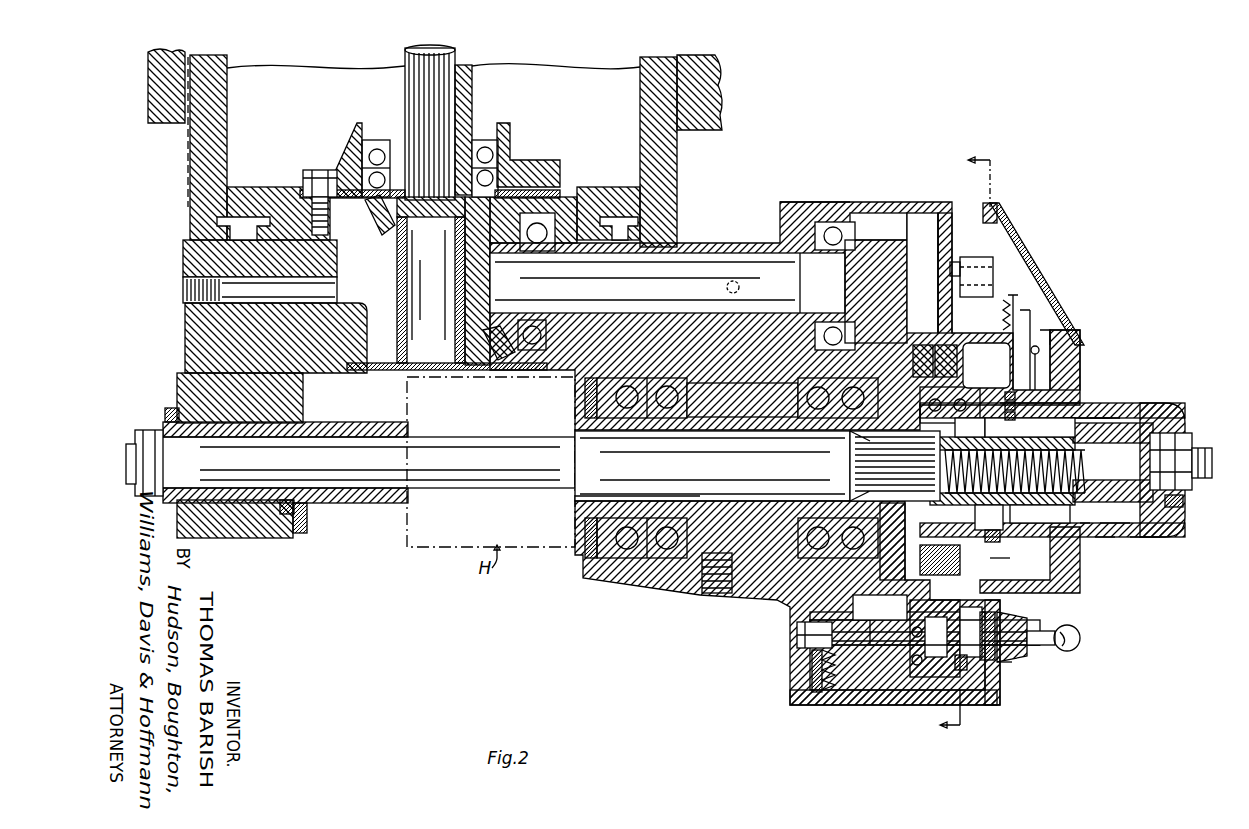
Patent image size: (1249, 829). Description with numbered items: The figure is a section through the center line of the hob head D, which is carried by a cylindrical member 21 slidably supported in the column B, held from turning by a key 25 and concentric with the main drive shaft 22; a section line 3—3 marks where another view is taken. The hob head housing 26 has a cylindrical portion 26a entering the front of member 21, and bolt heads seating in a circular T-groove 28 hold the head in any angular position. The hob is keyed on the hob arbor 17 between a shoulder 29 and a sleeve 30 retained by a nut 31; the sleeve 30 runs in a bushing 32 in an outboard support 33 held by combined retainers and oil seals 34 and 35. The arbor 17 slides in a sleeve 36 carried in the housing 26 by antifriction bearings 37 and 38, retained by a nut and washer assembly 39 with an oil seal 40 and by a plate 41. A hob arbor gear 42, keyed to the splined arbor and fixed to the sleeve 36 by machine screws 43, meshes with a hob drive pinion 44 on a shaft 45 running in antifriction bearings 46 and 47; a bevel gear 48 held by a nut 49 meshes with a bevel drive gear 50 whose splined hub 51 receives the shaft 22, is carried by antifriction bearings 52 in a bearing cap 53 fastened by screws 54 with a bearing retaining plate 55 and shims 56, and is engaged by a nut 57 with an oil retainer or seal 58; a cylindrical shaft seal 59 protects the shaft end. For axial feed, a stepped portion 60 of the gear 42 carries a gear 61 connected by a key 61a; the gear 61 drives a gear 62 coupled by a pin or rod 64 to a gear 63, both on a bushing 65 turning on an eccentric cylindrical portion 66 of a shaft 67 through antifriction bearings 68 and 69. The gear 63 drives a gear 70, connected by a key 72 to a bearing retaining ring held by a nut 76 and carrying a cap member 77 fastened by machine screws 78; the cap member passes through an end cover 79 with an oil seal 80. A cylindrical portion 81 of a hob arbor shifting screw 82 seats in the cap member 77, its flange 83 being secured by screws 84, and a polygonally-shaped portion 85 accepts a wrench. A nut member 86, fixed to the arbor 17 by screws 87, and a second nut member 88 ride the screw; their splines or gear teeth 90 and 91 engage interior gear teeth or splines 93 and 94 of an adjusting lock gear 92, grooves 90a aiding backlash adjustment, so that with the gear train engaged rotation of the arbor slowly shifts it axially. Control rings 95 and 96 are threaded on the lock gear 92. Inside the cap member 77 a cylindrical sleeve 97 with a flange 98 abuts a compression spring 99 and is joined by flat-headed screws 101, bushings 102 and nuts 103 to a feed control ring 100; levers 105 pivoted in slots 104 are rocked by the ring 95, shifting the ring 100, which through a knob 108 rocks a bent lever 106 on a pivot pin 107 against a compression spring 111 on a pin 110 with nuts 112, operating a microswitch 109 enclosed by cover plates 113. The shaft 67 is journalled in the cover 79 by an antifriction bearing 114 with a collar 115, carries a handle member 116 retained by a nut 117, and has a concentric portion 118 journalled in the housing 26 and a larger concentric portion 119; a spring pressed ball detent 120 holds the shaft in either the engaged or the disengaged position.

The hob arbor 17 is at (575, 442).
The cylindrical member 21 is at (677, 170).
The main drive shaft 22 is at (472, 85).
The key 25 is at (186, 150).
The hob head housing 26 is at (750, 243).
The cylindrical portion 26a is at (575, 197).
The circular T-groove 28 is at (245, 215).
The shoulder 29 is at (575, 497).
The sleeve 30 is at (352, 503).
The nut 31 is at (152, 428).
The bushing 32 is at (225, 515).
The outboard support 33 is at (293, 520).
The combined retainer and oil seal 34 is at (170, 408).
The combined retainer and oil seal 35 is at (286, 514).
The sleeve 36 is at (745, 417).
The antifriction bearings 37 is at (682, 390).
The antifriction bearings 38 is at (798, 397).
The nut and washer assembly 39 is at (585, 396).
The oil seal 40 is at (585, 548).
The plate 41 is at (830, 650).
The hob arbor gear 42 is at (900, 620).
The machine screws 43 is at (855, 452).
The hob drive pinion 44 is at (882, 250).
The shaft 45 is at (693, 253).
The antifriction bearing 46 is at (835, 222).
The antifriction bearing 47 is at (530, 352).
The bevel gear 48 is at (490, 352).
The nut 49 is at (489, 340).
The bevel drive gear 50 is at (385, 230).
The splined hub 51 is at (405, 80).
The antifriction bearings 52 is at (498, 162).
The bearing cap 53 is at (540, 180).
The screws 54 is at (322, 170).
The bearing retaining plate 55 is at (365, 200).
The shims 56 is at (355, 198).
The nut 57 is at (487, 140).
The oil retainer or seal 58 is at (377, 140).
The cylindrical shaft seal 59 is at (397, 296).
The stepped portion 60 is at (945, 302).
The gear 61 is at (925, 345).
The key 61a is at (940, 352).
The gear 62 is at (925, 677).
The gear 63 is at (965, 702).
The pin or rod 64 is at (960, 565).
The bushing 65 is at (912, 680).
The cylindrical portion 66 is at (972, 607).
The shaft 67 is at (1020, 627).
The antifriction bearing 68 is at (962, 665).
The antifriction bearing 69 is at (905, 650).
The gear 70 is at (926, 326).
The key 72 is at (1000, 560).
The nut 76 is at (976, 427).
The cap member 77 is at (1088, 525).
The machine screws 78 is at (990, 380).
The end cover 79 is at (938, 264).
The oil seal 80 is at (1080, 396).
The cylindrical portion 81 is at (1192, 456).
The hob arbor shifting screw 82 is at (1025, 505).
The flange 83 is at (1195, 486).
The screws 84 is at (1183, 501).
The polygonally-shaped portion 85 is at (1212, 466).
The nut member 86 is at (1065, 505).
The screws 87 is at (1045, 537).
The second nut member 88 is at (1130, 423).
The splines or gear teeth 90 is at (1100, 423).
The grooves 90a is at (1105, 402).
The splines or gear teeth 91 is at (1105, 527).
The adjusting lock gear 92 is at (1105, 539).
The gear teeth or splines 93 is at (1080, 570).
The gear teeth or splines 94 is at (1185, 416).
The control ring 95 is at (1120, 538).
The control ring 96 is at (1140, 538).
The cylindrical sleeve 97 is at (1075, 412).
The flange 98 is at (1160, 410).
The compression spring 99 is at (1165, 537).
The feed control ring 100 is at (1002, 393).
The flat-headed screws 101 is at (1003, 383).
The bushings 102 is at (1001, 404).
The nuts 103 is at (1027, 368).
The slots 104 is at (989, 517).
The levers 105 is at (995, 542).
The bent lever 106 is at (1043, 330).
The pivot pin 107 is at (1080, 362).
The knob 108 is at (1030, 427).
The microswitch 109 is at (978, 257).
The pin 110 is at (1018, 298).
The compression spring 111 is at (1000, 320).
The nuts 112 is at (1032, 312).
The cover plates 113 is at (1028, 262).
The antifriction bearing 114 is at (992, 662).
The collar 115 is at (995, 616).
The handle member 116 is at (1010, 666).
The nut 117 is at (1068, 652).
The portion 118 is at (797, 636).
The concentric portion 119 is at (838, 694).
The spring pressed ball detent 120 is at (815, 668).
The section line 3 is at (956, 445).
The column B is at (722, 95).
The hob head D is at (805, 200).